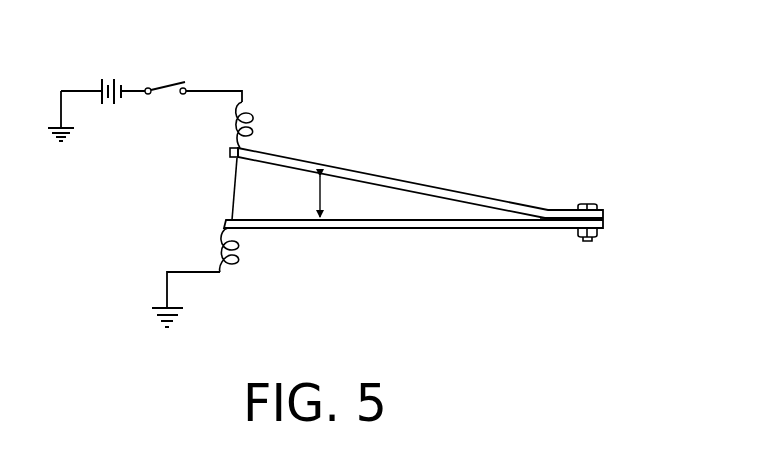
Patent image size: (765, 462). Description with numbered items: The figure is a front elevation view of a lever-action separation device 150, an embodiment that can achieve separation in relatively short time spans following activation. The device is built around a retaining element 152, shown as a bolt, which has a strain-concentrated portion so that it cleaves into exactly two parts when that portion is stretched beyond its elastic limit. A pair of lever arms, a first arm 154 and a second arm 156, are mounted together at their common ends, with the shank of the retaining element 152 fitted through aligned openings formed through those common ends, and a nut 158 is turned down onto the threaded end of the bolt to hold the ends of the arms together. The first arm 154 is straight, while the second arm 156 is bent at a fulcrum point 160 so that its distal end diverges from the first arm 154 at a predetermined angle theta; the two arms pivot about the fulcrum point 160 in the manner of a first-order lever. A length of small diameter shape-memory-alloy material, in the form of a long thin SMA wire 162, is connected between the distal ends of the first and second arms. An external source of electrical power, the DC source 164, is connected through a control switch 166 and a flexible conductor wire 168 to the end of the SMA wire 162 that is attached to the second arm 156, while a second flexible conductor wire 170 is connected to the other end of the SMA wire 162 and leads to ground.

The lever-action separation device 150 is at (379, 195).
The retaining element 152 is at (588, 205).
The first arm 154 is at (423, 230).
The second arm 156 is at (360, 167).
The nut 158 is at (590, 241).
The fulcrum point 160 is at (541, 229).
The SMA wire 162 is at (232, 187).
The DC source 164 is at (102, 79).
The control switch 166 is at (177, 83).
The flexible conductor wire 168 is at (246, 130).
The second flexible conductor wire 170 is at (237, 254).